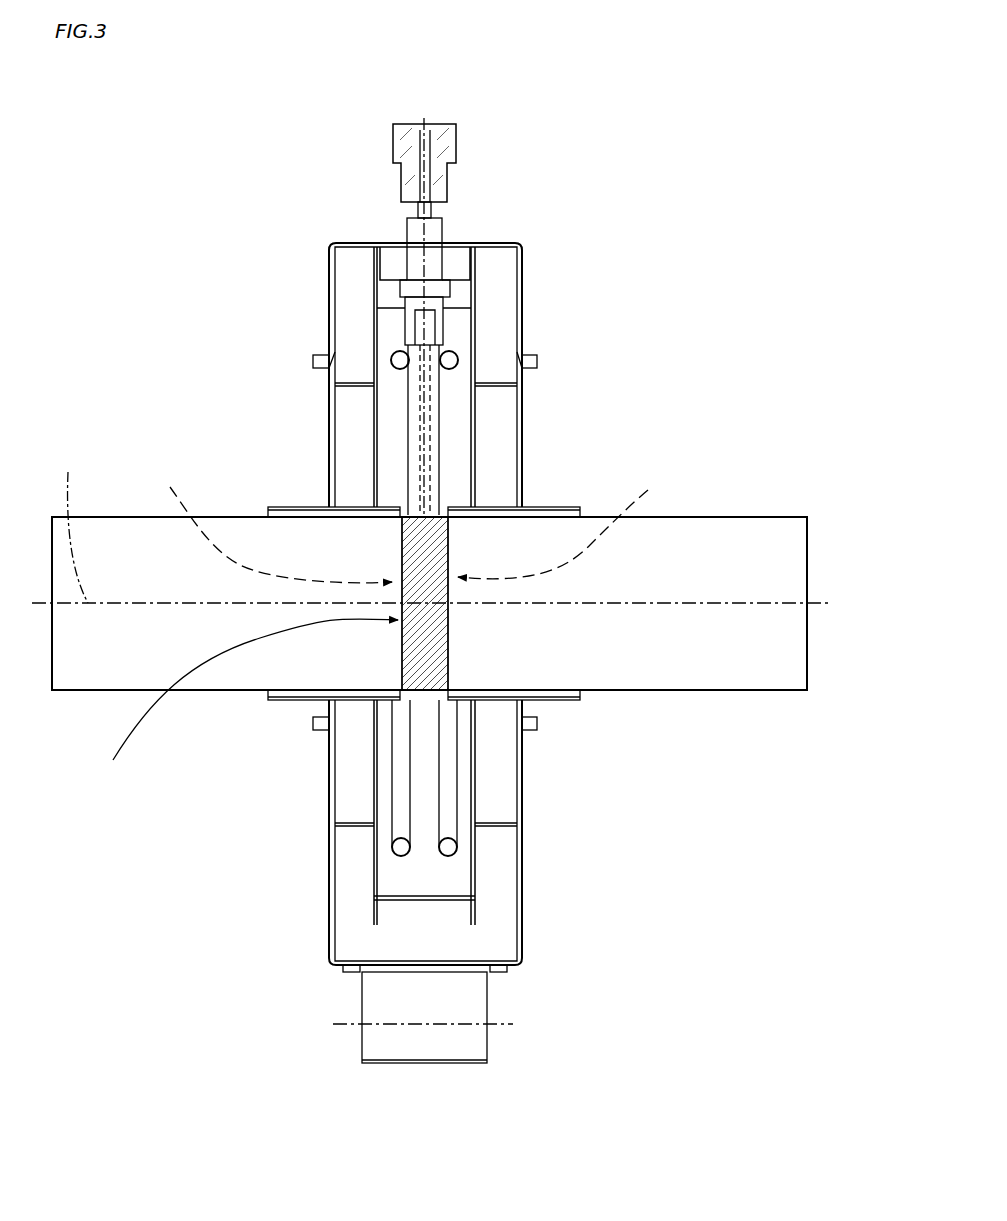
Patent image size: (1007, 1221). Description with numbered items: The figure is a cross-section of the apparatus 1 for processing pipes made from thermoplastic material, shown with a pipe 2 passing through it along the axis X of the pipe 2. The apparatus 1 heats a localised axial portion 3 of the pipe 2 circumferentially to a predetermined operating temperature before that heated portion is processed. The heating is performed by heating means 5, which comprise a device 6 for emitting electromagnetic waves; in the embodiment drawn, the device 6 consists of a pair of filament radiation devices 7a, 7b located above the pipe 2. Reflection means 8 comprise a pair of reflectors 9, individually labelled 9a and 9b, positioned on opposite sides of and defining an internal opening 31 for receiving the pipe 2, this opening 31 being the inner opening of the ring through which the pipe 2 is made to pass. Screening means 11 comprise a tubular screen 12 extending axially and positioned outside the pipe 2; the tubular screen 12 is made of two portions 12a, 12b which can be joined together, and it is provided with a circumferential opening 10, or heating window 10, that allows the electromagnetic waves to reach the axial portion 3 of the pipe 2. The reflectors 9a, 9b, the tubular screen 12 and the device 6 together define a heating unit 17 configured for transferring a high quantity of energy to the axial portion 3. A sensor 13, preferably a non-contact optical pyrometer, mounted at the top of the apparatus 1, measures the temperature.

The apparatus for processing pipes 1 is at (554, 198).
The pipe 2 is at (755, 516).
The axial portion 3 is at (249, 702).
The heating means 5 is at (283, 245).
The device for emitting electromagnetic waves 6 is at (283, 245).
The filament radiation device 7a is at (398, 351).
The filament radiation device 7b is at (452, 352).
The reflection means 8 is at (392, 804).
The reflectors 9 is at (392, 804).
The reflector 9a is at (379, 718).
The reflector 9b is at (466, 775).
The circumferential opening 10 is at (405, 507).
The screening means 11 is at (269, 557).
The tubular screen 12 is at (269, 557).
The portion of tubular screen 12a is at (278, 506).
The portion of tubular screen 12b is at (553, 506).
The sensor 13 is at (461, 190).
The heating unit 17 is at (527, 393).
The opening for receiving the pipe 31 is at (411, 525).
The axis of the pipe X is at (73, 526).